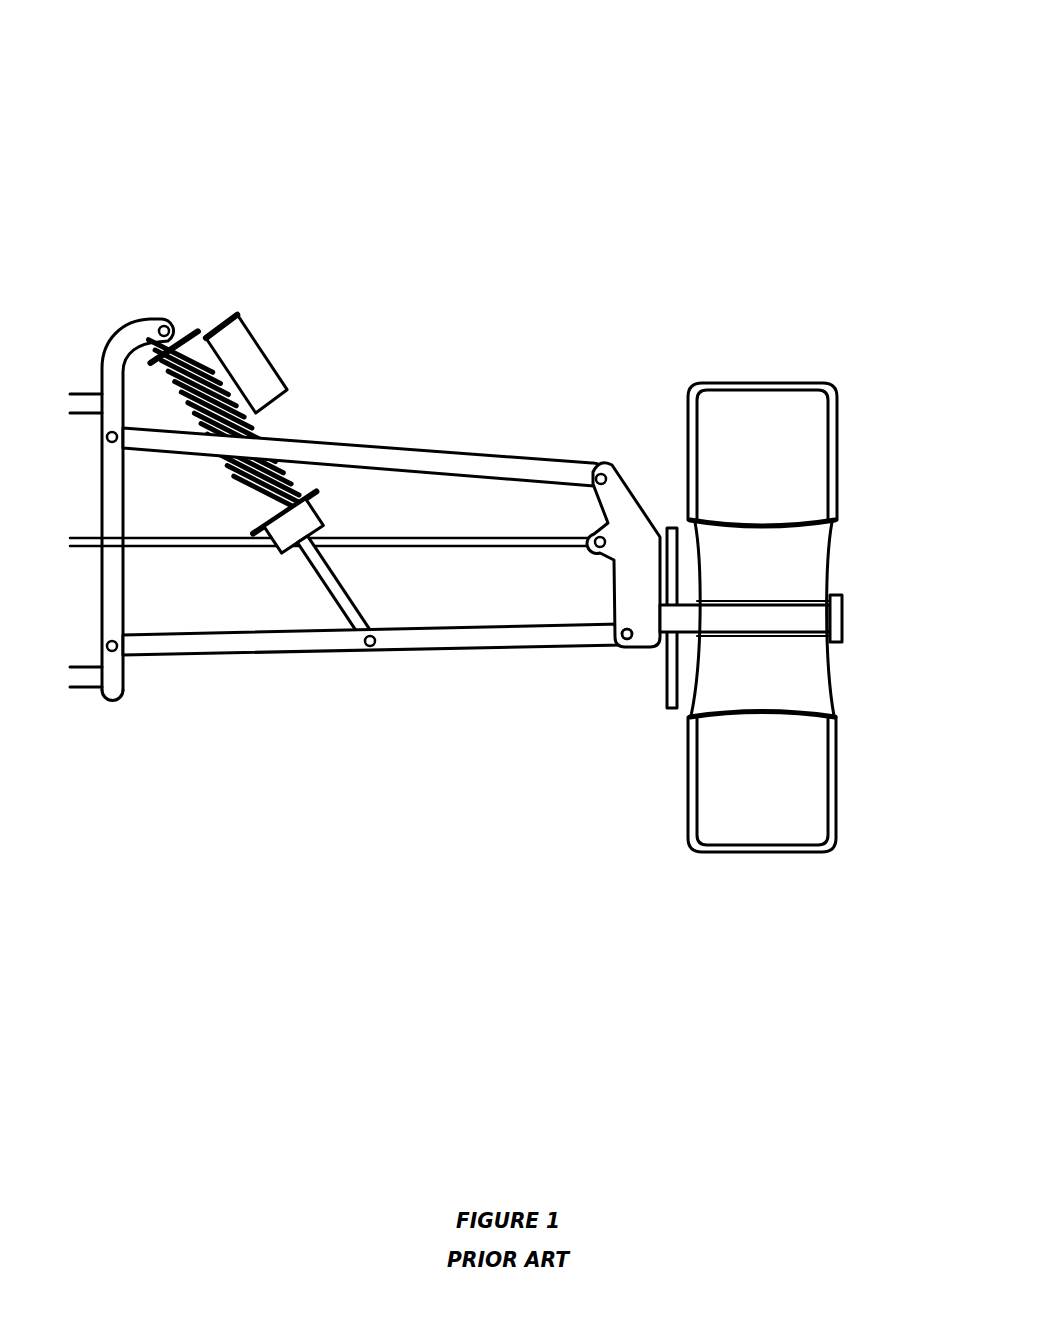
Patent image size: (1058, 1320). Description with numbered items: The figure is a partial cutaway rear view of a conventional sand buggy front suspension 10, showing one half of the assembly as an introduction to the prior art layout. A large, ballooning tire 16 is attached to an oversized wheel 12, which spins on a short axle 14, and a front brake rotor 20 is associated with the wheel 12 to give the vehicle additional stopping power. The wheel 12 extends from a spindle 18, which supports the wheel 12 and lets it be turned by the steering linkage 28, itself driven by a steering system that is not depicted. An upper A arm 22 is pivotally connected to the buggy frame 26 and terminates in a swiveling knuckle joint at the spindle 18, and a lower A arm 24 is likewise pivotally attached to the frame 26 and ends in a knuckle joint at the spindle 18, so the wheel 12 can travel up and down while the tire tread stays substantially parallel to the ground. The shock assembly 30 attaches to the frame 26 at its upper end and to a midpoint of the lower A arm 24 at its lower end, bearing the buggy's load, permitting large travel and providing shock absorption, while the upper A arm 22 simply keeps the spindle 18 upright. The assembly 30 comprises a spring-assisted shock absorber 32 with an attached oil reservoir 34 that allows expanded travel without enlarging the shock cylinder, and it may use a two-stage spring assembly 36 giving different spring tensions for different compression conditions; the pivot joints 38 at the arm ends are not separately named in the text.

The front suspension 10 is at (748, 159).
The wheel 12 is at (845, 549).
The axle 14 is at (840, 659).
The tire 16 is at (815, 853).
The spindle 18 is at (623, 487).
The front brake rotor 20 is at (667, 692).
The upper A arm 22 is at (438, 458).
The lower A arm 24 is at (415, 645).
The frame 26 is at (140, 345).
The steering linkage 28 is at (167, 546).
The shock assembly 30 is at (293, 318).
The spring-assisted shock absorber 32 is at (263, 560).
The oil reservoir 34 is at (277, 380).
The 2-stage spring assembly 36 is at (278, 432).
The pivot joint 38 is at (173, 303).